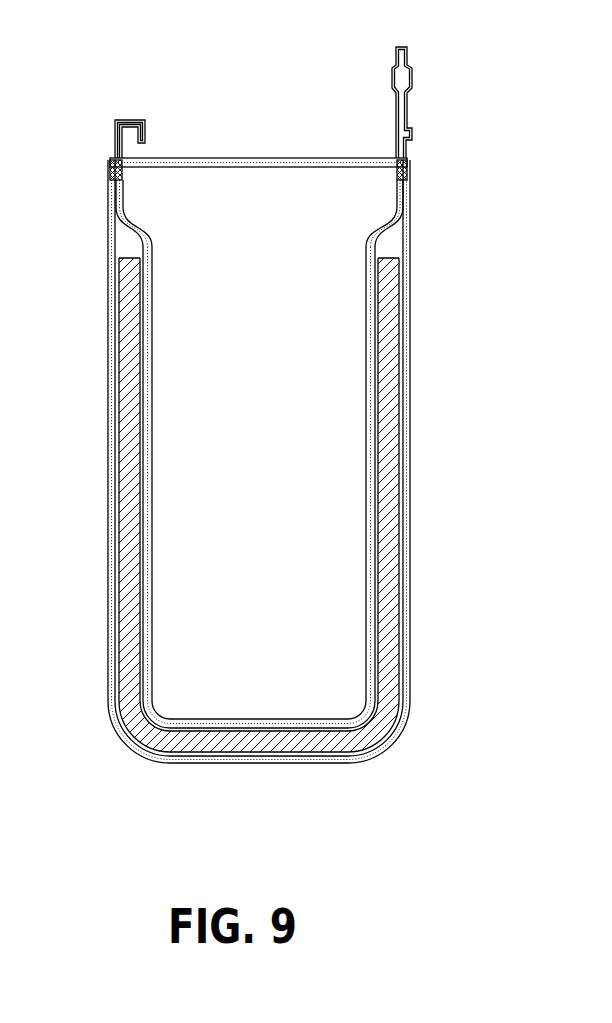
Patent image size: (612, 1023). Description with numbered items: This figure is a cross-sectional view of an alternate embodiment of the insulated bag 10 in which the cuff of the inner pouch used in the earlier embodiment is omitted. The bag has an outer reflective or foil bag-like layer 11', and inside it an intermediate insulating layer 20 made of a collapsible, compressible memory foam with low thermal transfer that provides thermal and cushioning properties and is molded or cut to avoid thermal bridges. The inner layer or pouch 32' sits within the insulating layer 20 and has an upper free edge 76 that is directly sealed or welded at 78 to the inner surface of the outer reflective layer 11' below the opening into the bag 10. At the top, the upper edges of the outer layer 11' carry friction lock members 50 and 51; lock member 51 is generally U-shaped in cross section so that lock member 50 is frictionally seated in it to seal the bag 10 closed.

The insulated bag 10 is at (88, 662).
The outer reflective layer 11' is at (223, 461).
The intermediate insulating layer 20 is at (122, 480).
The inner layer or pouch 32' is at (259, 487).
The friction lock member 50 is at (415, 135).
The friction lock member 51 is at (113, 128).
The upper free edge 76 is at (125, 187).
The seal or weld 78 is at (112, 165).